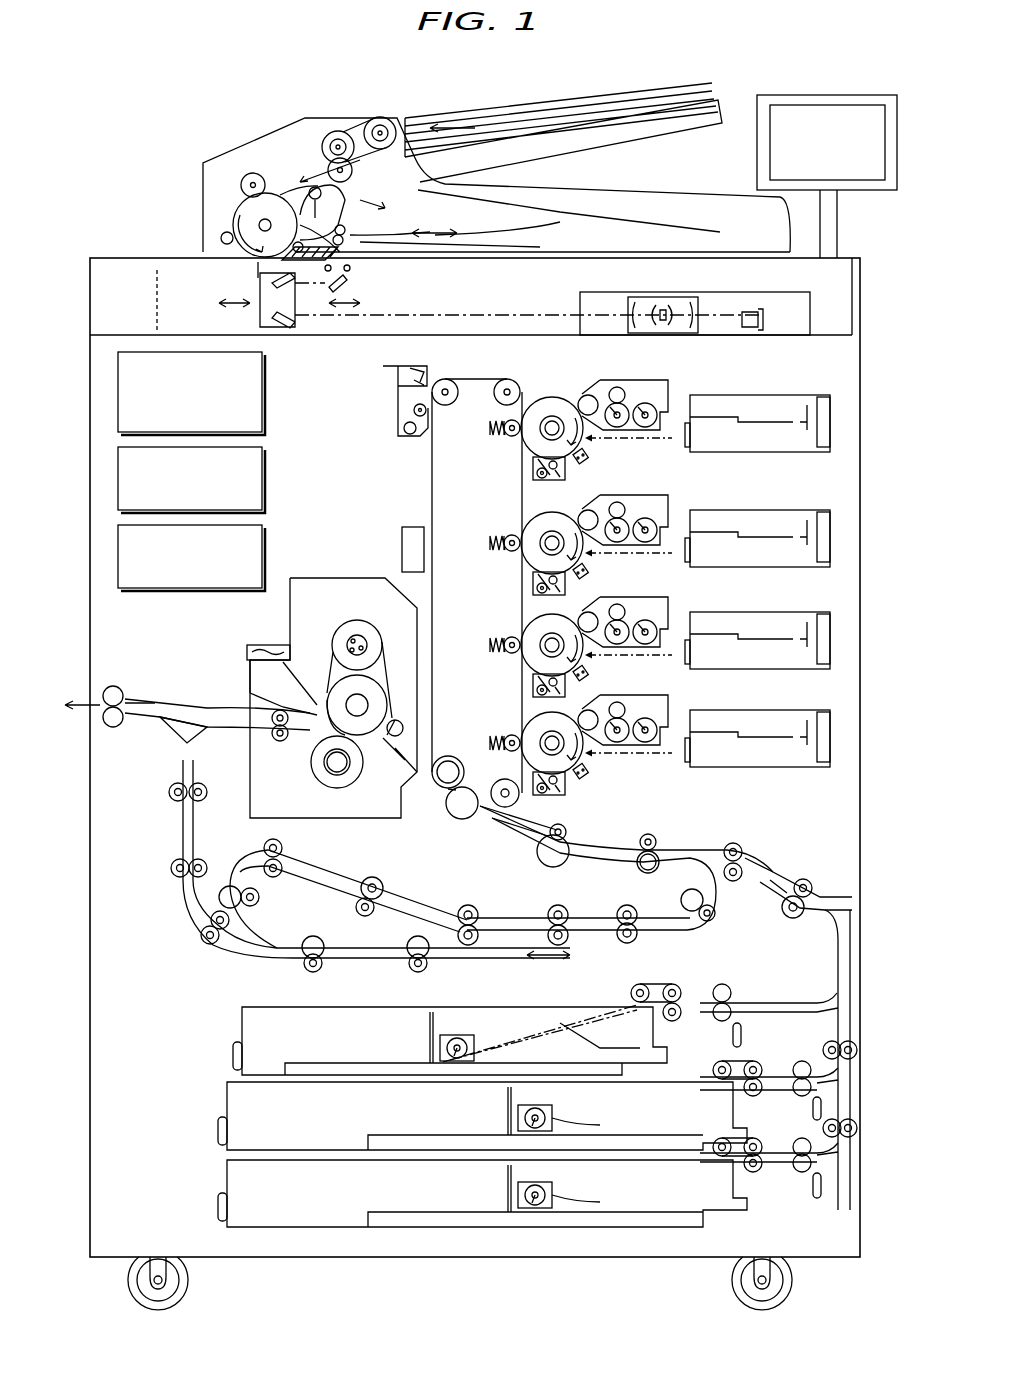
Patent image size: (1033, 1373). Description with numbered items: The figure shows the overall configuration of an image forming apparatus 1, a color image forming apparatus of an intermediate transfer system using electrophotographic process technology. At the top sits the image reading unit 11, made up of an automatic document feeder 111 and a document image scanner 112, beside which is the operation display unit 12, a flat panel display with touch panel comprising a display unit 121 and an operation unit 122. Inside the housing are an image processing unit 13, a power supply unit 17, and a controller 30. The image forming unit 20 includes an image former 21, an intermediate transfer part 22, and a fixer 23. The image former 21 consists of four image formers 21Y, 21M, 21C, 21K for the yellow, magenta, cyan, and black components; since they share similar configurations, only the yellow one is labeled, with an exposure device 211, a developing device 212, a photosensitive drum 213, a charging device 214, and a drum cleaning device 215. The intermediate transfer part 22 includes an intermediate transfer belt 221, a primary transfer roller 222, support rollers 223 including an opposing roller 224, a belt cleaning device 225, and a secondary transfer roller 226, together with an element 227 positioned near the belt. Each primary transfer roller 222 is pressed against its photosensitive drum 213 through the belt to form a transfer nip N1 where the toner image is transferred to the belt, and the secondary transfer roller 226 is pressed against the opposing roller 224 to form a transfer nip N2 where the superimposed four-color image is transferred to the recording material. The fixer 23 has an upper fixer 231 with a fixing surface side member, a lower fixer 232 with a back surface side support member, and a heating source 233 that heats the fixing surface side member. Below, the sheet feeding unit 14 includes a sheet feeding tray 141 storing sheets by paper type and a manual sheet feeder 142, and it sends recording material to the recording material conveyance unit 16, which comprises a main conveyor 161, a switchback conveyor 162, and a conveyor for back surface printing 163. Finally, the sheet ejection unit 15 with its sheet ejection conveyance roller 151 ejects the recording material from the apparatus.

The image forming apparatus 1 is at (442, 82).
The image reading unit 11 is at (140, 165).
The automatic document feeder 111 is at (200, 170).
The document image scanner 112 is at (169, 272).
The operation display unit 12 is at (819, 104).
The display unit 121 is at (827, 115).
The operation unit 122 is at (860, 154).
The image processing unit 13 is at (264, 372).
The power supply unit 17 is at (264, 487).
The controller 30 is at (264, 561).
The image forming unit 20 is at (847, 573).
The image former 21 is at (636, 572).
The image former for Y component 21Y is at (682, 470).
The image former for M component 21M is at (614, 573).
The image former for C component 21C is at (612, 679).
The image former for K component 21K is at (612, 777).
The exposure device 211 is at (757, 401).
The developing device 212 is at (625, 392).
The photosensitive drum 213 is at (550, 404).
The charging device 214 is at (612, 455).
The drum cleaning device 215 is at (585, 474).
The intermediate transfer part 22 is at (479, 601).
The intermediate transfer belt 221 is at (430, 493).
The primary transfer roller 222 is at (481, 452).
The support rollers 223 is at (498, 398).
The opposing roller 224 is at (451, 754).
The belt cleaning device 225 is at (393, 428).
The secondary transfer roller 226 is at (460, 816).
The exposure device 227 is at (400, 548).
The transfer nip (primary transfer part) N1 is at (487, 469).
The transfer nip (secondary transfer part) N2 is at (443, 800).
The fixer 23 is at (288, 622).
The upper fixer 231 is at (325, 648).
The lower fixer 232 is at (308, 772).
The heating source 233 is at (358, 640).
The sheet ejection unit 15 is at (103, 682).
The sheet ejection conveyance roller 151 is at (113, 729).
The recording material conveyance unit 16 is at (617, 902).
The main conveyor 161 is at (518, 830).
The switchback conveyor 162 is at (231, 950).
The conveyor for back surface printing 163 is at (430, 917).
The sheet feeding unit 14 is at (847, 1016).
The sheet feeding tray 141 is at (221, 1100).
The manual sheet feeder 142 is at (838, 892).